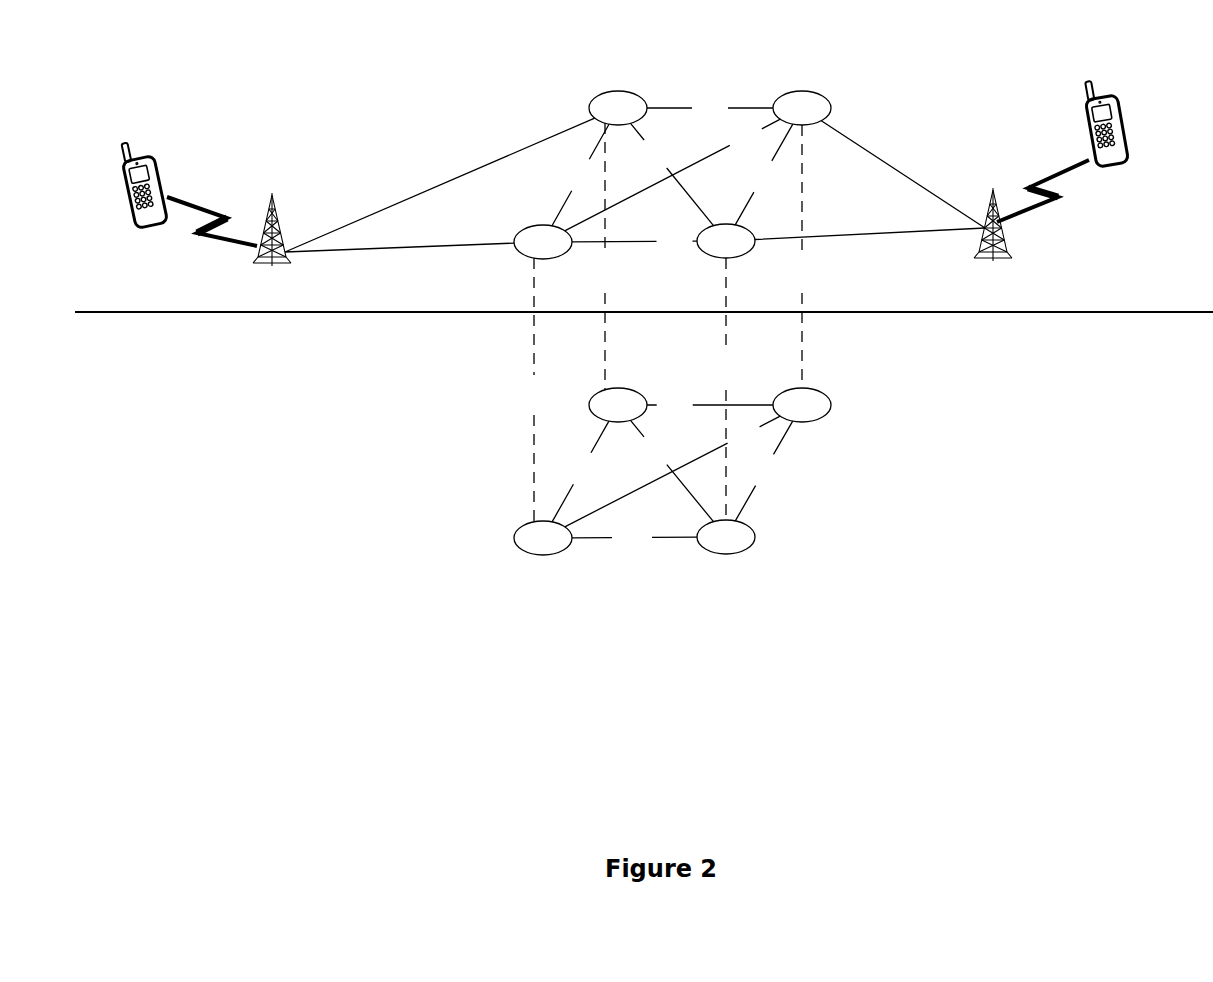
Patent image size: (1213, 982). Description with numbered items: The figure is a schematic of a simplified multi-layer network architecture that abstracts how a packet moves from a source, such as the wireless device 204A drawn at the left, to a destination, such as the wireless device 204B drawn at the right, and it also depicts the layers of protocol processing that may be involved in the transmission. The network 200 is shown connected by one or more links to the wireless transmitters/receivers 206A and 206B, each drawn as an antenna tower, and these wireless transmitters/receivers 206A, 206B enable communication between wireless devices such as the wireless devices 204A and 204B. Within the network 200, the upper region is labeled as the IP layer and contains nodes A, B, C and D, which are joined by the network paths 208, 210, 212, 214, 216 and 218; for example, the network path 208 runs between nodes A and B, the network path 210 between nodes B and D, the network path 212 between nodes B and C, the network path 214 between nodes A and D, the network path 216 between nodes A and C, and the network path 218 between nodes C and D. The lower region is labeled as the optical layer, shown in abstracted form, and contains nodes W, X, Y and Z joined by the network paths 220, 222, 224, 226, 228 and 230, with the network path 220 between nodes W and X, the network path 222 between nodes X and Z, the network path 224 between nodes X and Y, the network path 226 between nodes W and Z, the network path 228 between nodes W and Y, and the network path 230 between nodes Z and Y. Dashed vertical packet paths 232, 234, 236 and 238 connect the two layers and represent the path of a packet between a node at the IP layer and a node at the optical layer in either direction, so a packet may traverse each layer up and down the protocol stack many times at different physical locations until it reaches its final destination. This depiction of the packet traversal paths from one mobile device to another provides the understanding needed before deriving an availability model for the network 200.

The network 200 is at (665, 48).
The wireless device 204A is at (166, 163).
The wireless device 204B is at (1127, 104).
The wireless transmitter/receiver 206A is at (273, 210).
The wireless transmitter/receiver 206B is at (995, 258).
The network path 208 is at (580, 175).
The network path 210 is at (710, 108).
The network path 212 is at (672, 174).
The network path 214 is at (673, 175).
The network path 216 is at (634, 242).
The network path 218 is at (764, 174).
The network path 220 is at (580, 471).
The network path 222 is at (710, 405).
The network path 224 is at (672, 470).
The network path 226 is at (672, 471).
The network path 228 is at (634, 538).
The network path 230 is at (763, 471).
The packet path 232 is at (605, 256).
The packet path 234 is at (534, 390).
The packet path 236 is at (802, 256).
The packet path 238 is at (726, 389).